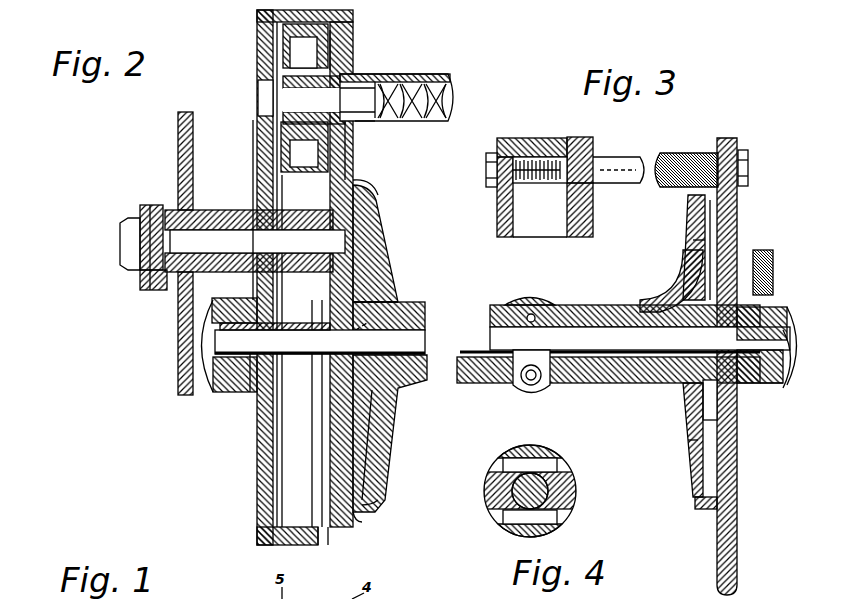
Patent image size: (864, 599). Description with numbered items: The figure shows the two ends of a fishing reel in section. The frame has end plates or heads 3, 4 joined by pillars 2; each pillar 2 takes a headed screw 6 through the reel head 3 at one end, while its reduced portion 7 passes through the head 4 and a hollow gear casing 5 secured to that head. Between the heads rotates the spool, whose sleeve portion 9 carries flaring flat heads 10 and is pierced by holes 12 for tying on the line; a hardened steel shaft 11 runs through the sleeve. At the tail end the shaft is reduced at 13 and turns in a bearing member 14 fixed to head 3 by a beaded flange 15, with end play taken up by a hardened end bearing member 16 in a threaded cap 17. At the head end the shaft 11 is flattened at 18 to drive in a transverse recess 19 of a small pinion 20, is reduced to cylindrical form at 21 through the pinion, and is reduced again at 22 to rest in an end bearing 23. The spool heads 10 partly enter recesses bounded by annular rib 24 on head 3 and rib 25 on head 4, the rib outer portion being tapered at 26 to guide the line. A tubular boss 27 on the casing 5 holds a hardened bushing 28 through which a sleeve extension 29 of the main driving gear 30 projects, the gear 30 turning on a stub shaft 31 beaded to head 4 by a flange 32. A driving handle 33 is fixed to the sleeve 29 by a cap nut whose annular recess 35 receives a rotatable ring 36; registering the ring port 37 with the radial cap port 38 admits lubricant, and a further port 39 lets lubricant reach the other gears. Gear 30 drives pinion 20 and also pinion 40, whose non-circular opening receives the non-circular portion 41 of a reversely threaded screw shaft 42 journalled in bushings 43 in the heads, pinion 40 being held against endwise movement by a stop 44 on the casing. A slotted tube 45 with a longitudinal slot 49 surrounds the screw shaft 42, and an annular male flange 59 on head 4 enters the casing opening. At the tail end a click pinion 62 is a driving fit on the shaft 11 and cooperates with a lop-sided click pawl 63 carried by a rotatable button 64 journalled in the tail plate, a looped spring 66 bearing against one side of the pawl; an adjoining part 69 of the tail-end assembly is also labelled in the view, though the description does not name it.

In FIG. 3, the pillars 2 is at (623, 158).
In FIG. 3, the end plate 3 is at (737, 534).
In FIG. 2, the end plate 4 is at (333, 50).
In FIG. 3, the end plate 4 is at (579, 137).
In FIG. 2, the gear casing 5 is at (257, 490).
In FIG. 3, the gear casing 5 is at (497, 206).
In FIG. 3, the headed screw 6 is at (742, 162).
In FIG. 3, the reduced portion 7 is at (581, 155).
In FIG. 2, the sleeve portion 9 is at (422, 310).
In FIG. 3, the sleeve portion 9 is at (600, 383).
In FIG. 4, the sleeve portion 9 is at (565, 479).
In FIG. 2, the spool heads 10 is at (380, 455).
In FIG. 3, the spool heads 10 is at (688, 240).
In FIG. 2, the shaft 11 is at (410, 345).
In FIG. 3, the shaft 11 is at (580, 320).
In FIG. 4, the shaft 11 is at (567, 496).
In FIG. 3, the holes 12 is at (538, 386).
In FIG. 4, the holes 12 is at (480, 466).
In FIG. 3, the reduced end 13 is at (768, 318).
In FIG. 3, the bearing member 14 is at (762, 392).
In FIG. 3, the flange 15 is at (740, 400).
In FIG. 3, the end bearing member 16 is at (772, 388).
In FIG. 3, the threaded cap 17 is at (773, 270).
In FIG. 2, the flattened portion 18 is at (380, 405).
In FIG. 2, the transverse recess 19 is at (382, 318).
In FIG. 3, the transverse recess 19 is at (486, 161).
In FIG. 2, the pinion 20 is at (352, 300).
In FIG. 2, the cylindrical portion 21 is at (304, 360).
In FIG. 2, the reduced portion 22 is at (220, 393).
In FIG. 2, the end bearing 23 is at (235, 393).
In FIG. 3, the annular rib 24 is at (697, 506).
In FIG. 2, the annular rib 25 is at (363, 506).
In FIG. 2, the taper 26 is at (360, 516).
In FIG. 2, the tubular boss 27 is at (222, 210).
In FIG. 2, the bushing 28 is at (254, 200).
In FIG. 2, the sleeve extension 29 is at (207, 210).
In FIG. 2, the main driving gear 30 is at (348, 128).
In FIG. 2, the stub shaft 31 is at (358, 198).
In FIG. 2, the flange 32 is at (372, 225).
In FIG. 2, the driving handle 33 is at (178, 136).
In FIG. 2, the annular recess 35 is at (146, 291).
In FIG. 2, the rotatable ring 36 is at (141, 212).
In FIG. 2, the port 37 is at (153, 205).
In FIG. 2, the cap port 38 is at (122, 233).
In FIG. 2, the port 39 is at (312, 242).
In FIG. 2, the pinion 40 is at (333, 34).
In FIG. 2, the non-circular portion 41 is at (328, 66).
In FIG. 2, the screw shaft 42 is at (455, 97).
In FIG. 2, the bushings 43 is at (355, 78).
In FIG. 2, the stop 44 is at (262, 88).
In FIG. 2, the slotted tube 45 is at (430, 74).
In FIG. 2, the longitudinal slot 49 is at (372, 124).
In FIG. 2, the male flange 59 is at (321, 540).
In FIG. 3, the click pinion 62 is at (684, 387).
In FIG. 3, the click pawl 63 is at (690, 280).
In FIG. 3, the rotatable button 64 is at (733, 252).
In FIG. 3, the looped spring 66 is at (690, 215).
In FIG. 3, the arm portion 69 is at (690, 438).